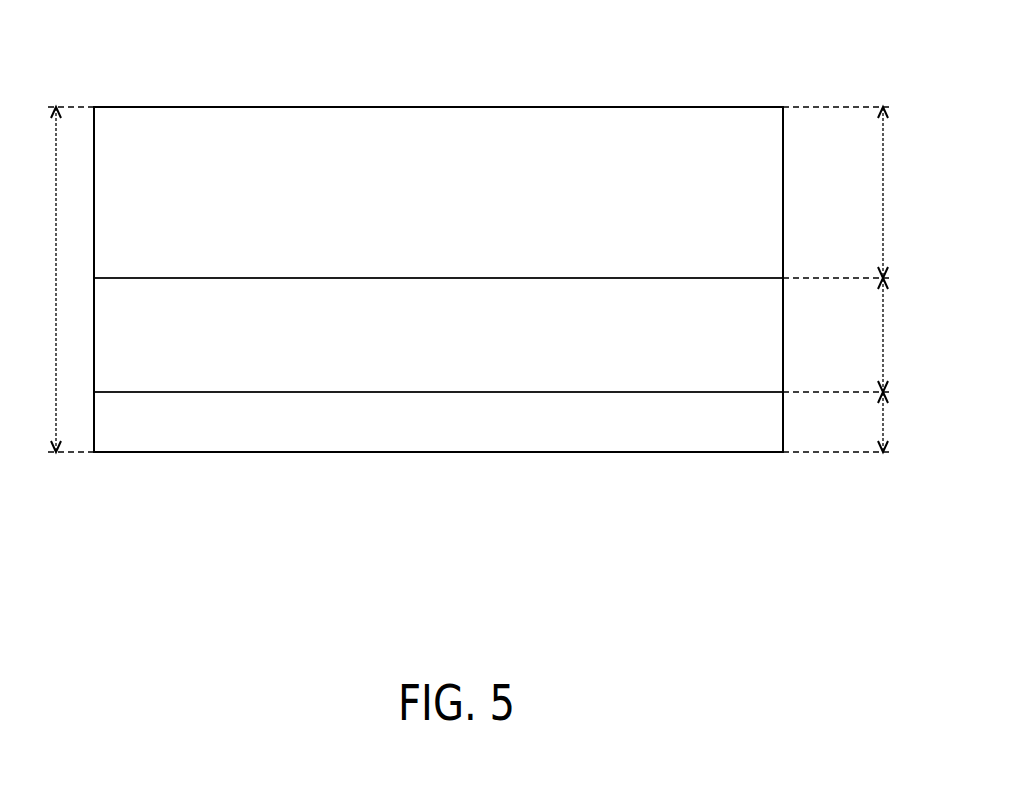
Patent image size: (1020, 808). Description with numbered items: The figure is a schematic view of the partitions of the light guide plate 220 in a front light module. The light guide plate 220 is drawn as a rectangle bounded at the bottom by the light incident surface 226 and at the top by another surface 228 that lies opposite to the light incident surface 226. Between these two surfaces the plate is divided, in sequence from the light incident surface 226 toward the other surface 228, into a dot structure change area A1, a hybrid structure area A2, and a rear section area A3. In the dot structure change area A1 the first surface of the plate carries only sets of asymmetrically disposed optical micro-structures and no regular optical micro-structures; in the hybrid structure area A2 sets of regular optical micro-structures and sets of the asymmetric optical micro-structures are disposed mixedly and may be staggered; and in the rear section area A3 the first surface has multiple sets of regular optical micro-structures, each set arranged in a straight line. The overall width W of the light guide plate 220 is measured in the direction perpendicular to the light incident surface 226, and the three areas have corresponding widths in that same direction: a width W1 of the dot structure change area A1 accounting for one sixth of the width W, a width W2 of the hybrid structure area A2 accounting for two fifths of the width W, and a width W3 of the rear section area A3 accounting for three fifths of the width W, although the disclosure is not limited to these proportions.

The light guide plate 220 is at (469, 307).
The light incident surface 226 is at (578, 454).
The another surface 228 is at (578, 105).
The dot structure change area A1 is at (755, 426).
The hybrid structure area A2 is at (755, 339).
The rear section area A3 is at (755, 196).
The width of the light guide plate W is at (39, 279).
The width of the dot structure change area W1 is at (907, 422).
The width of the hybrid structure area W2 is at (907, 335).
The width of the rear section area W3 is at (907, 192).